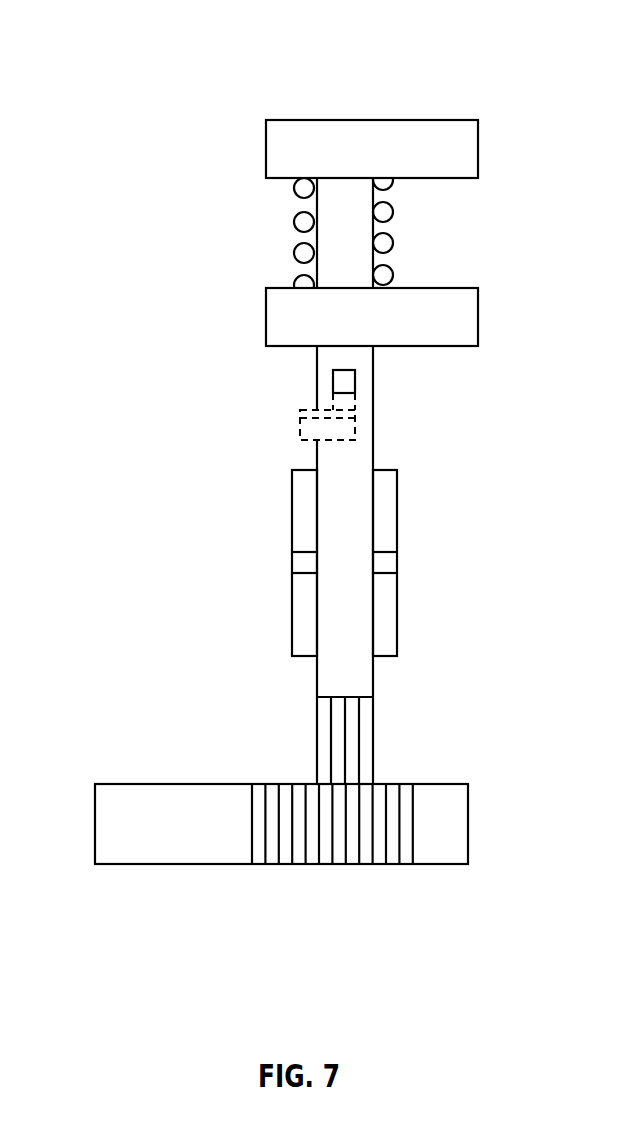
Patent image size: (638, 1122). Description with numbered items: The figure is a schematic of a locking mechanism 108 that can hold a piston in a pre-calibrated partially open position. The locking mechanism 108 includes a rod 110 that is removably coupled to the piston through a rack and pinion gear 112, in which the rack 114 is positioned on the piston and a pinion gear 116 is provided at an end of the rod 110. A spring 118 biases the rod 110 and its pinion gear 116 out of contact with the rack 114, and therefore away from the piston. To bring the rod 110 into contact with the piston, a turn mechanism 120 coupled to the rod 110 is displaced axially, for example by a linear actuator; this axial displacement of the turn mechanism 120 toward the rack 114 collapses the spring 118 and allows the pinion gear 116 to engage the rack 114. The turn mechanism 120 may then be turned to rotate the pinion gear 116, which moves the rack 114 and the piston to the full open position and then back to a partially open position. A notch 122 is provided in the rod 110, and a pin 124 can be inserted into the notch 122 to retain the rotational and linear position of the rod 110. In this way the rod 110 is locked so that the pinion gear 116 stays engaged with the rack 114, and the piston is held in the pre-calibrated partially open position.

The locking mechanism 108 is at (128, 72).
The rod 110 is at (355, 597).
The rack and pinion gear 112 is at (414, 879).
The rack 114 is at (286, 850).
The pinion gear 116 is at (316, 727).
The spring 118 is at (393, 213).
The turn mechanism 120 is at (450, 120).
The notch 122 is at (332, 400).
The pin 124 is at (355, 385).